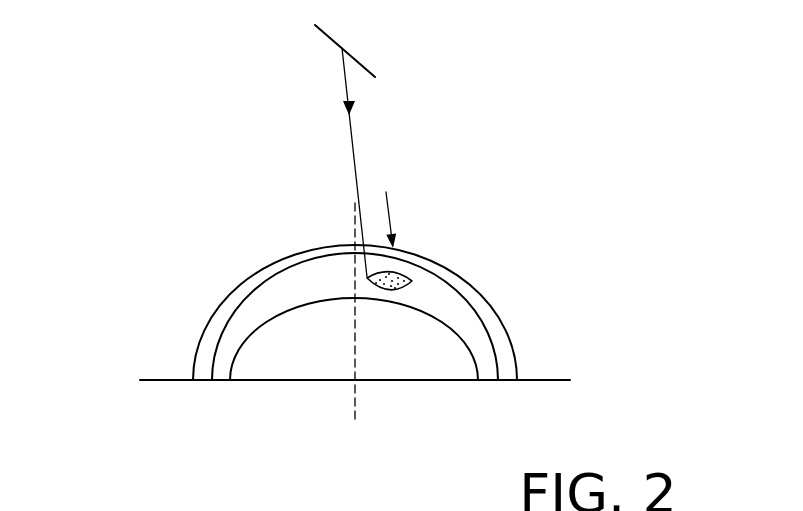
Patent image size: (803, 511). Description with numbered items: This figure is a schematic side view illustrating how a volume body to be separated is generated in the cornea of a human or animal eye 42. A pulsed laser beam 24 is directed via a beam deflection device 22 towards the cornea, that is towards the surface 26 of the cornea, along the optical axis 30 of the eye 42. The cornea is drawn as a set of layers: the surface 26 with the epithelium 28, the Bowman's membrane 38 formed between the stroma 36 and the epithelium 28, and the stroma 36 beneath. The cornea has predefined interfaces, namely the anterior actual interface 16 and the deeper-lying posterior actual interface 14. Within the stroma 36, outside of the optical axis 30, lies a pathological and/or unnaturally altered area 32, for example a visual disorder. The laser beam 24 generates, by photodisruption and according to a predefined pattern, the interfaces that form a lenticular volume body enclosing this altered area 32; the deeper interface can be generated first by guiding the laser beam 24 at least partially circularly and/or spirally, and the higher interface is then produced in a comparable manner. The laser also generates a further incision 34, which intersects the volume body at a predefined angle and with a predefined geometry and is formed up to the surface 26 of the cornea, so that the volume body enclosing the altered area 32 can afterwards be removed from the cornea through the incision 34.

The posterior actual interface 14 is at (403, 322).
The anterior actual interface 16 is at (385, 203).
The beam deflection device 22 is at (355, 60).
The pulsed laser beam 24 is at (353, 143).
The surface of the cornea 26 is at (507, 351).
The epithelium 28 is at (476, 310).
The optical axis 30 is at (353, 422).
The pathological and/or unnaturally altered area 32 is at (406, 283).
The incision 34 is at (415, 279).
The stroma 36 is at (487, 369).
The Bowman's membrane 38 is at (227, 325).
The eye 42 is at (186, 392).